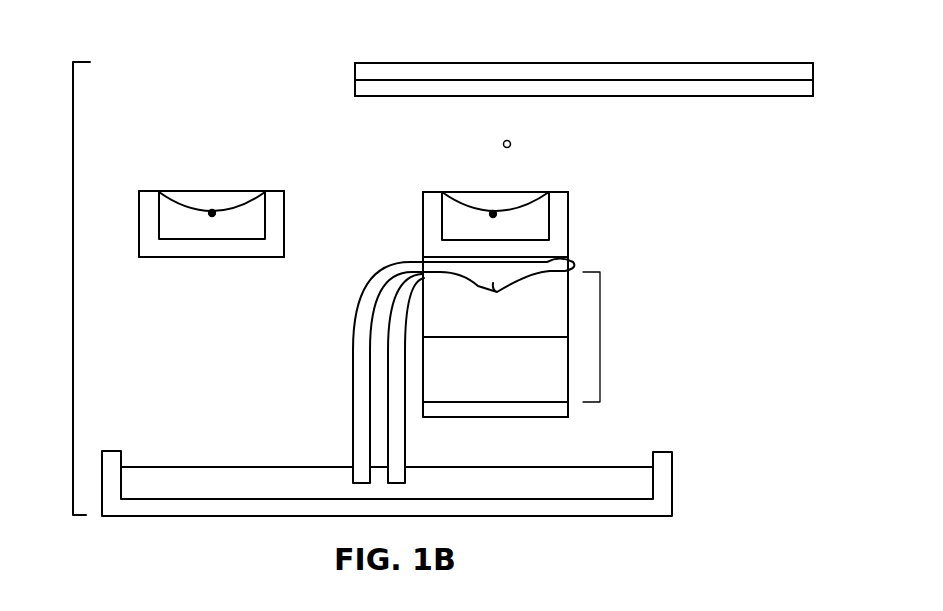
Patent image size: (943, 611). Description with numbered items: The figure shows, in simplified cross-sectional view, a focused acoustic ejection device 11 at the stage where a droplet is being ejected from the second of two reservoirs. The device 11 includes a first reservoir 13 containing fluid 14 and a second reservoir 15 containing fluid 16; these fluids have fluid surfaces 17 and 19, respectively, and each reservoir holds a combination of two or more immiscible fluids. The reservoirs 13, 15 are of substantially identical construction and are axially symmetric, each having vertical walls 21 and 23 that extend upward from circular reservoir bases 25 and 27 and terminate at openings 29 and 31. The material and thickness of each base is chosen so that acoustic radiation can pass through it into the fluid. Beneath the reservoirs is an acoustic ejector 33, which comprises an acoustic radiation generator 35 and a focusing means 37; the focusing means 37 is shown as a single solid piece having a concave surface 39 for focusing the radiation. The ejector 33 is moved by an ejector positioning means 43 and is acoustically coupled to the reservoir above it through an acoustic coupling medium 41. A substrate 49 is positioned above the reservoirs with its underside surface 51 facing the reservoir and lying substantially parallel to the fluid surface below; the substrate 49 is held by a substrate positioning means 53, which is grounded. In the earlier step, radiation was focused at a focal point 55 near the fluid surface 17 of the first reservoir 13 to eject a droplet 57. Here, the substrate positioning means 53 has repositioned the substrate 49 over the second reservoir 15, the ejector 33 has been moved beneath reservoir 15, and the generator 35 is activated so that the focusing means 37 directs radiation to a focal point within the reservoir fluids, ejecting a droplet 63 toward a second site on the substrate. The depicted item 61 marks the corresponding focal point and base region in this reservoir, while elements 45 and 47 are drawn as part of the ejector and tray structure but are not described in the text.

The device 11 is at (73, 288).
The first reservoir 13 is at (146, 221).
The fluid 14 is at (256, 223).
The second reservoir 15 is at (555, 233).
The fluid 16 is at (450, 225).
The fluid surface 17 is at (253, 195).
The fluid surface 19 is at (533, 194).
The vertical wall 21 is at (184, 205).
The vertical wall 23 is at (465, 210).
The reservoir base 25 is at (212, 258).
The reservoir base 27 is at (570, 267).
The opening 29 is at (172, 192).
The opening 31 is at (452, 191).
The acoustic ejector 33 is at (600, 337).
The acoustic radiation generator 35 is at (548, 368).
The focusing means 37 is at (547, 322).
The concave surface 39 is at (397, 263).
The acoustic coupling medium 41 is at (568, 282).
The ejector positioning means 43 is at (273, 470).
The heat pipes 45 is at (356, 343).
The tray 47 is at (663, 489).
The substrate 49 is at (358, 85).
The underside surface 51 is at (620, 98).
The substrate positioning means 53 is at (806, 73).
The focal point 55 is at (213, 212).
The droplet 57 is at (448, 97).
The second focal point / bottom layer 61 is at (493, 213).
The droplet 63 is at (511, 144).